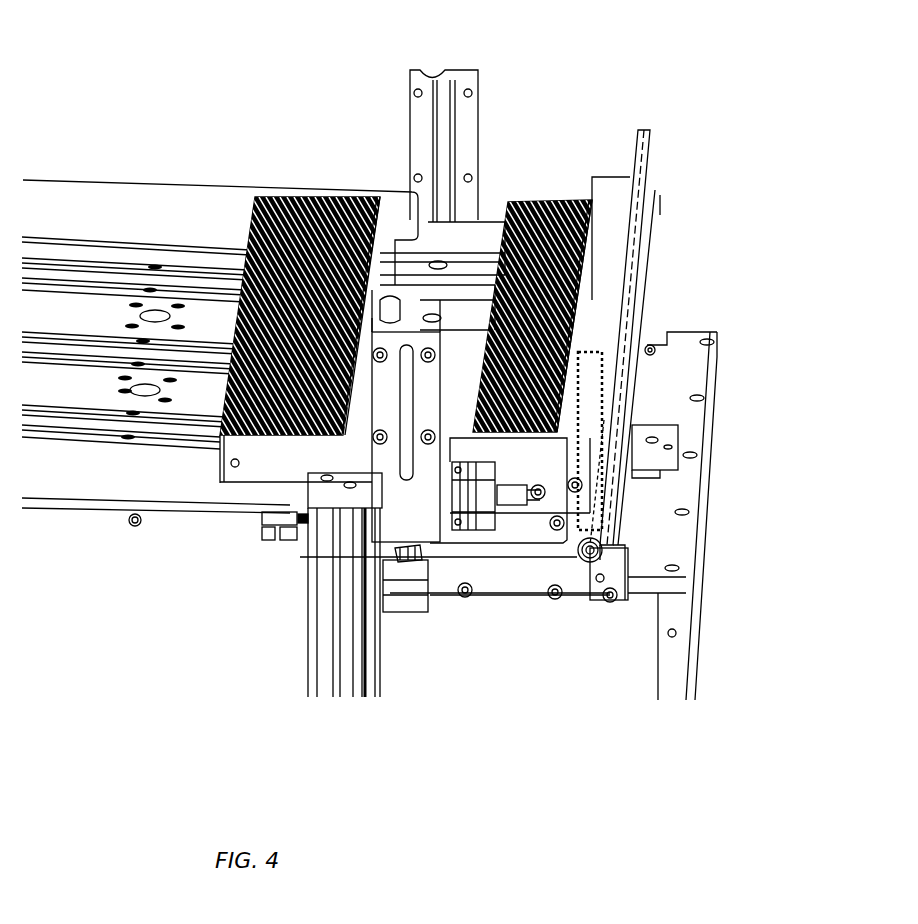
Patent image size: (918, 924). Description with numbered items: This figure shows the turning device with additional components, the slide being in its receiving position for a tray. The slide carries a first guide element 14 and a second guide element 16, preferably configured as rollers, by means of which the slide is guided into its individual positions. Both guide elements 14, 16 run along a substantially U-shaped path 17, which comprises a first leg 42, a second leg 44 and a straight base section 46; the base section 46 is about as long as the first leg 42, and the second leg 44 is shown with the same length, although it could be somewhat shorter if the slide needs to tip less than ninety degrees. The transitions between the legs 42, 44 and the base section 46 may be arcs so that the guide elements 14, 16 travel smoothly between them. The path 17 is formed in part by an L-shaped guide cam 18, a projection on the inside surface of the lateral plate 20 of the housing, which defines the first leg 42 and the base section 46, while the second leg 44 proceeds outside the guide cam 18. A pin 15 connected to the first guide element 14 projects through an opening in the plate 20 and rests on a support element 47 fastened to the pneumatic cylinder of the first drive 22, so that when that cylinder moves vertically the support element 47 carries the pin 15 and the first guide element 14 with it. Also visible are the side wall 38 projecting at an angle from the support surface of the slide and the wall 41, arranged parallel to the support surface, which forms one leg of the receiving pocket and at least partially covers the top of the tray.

The first guide element 14 is at (432, 557).
The pin 15 is at (417, 565).
The second guide element 16 is at (587, 563).
The U-shaped path 17 is at (593, 483).
The guide cam 18 is at (395, 538).
The lateral plate 20 is at (540, 530).
The first drive 22 is at (340, 550).
The side wall 38 is at (642, 232).
The wall 41 is at (615, 198).
The first leg 42 is at (410, 440).
The second leg 44 is at (600, 412).
The base section 46 is at (522, 550).
The support element 47 is at (392, 580).